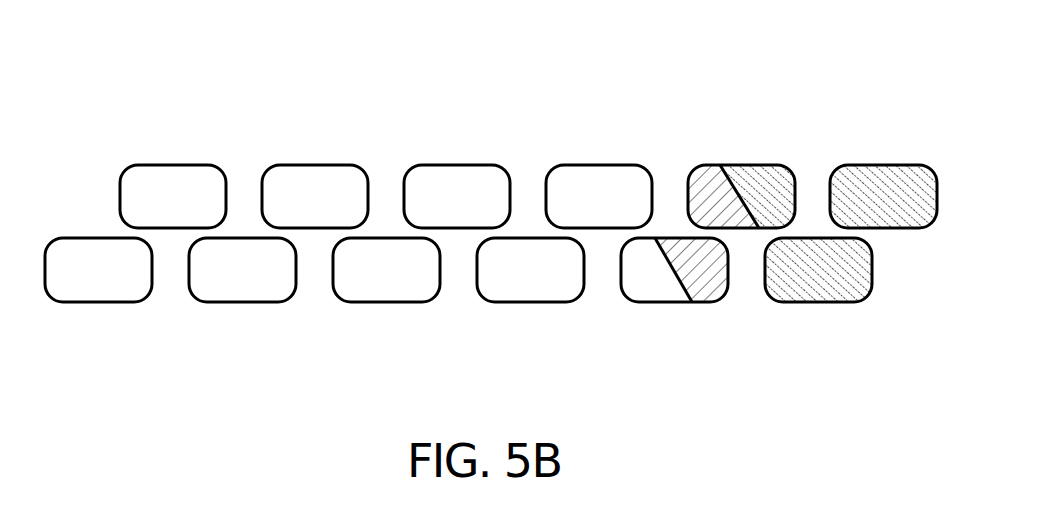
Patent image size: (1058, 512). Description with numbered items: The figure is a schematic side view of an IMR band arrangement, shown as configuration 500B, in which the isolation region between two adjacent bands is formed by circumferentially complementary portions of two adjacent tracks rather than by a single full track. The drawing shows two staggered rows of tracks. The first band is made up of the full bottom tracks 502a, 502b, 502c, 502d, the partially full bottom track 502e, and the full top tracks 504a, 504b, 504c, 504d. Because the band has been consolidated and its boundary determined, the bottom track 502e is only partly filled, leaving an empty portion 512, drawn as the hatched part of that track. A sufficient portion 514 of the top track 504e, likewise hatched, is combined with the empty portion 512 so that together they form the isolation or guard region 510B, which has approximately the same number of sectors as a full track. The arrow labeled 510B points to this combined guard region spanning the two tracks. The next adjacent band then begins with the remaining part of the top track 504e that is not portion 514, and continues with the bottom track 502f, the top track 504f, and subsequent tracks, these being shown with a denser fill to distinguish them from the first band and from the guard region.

The configuration 500B is at (152, 85).
The isolation or guard region 510B is at (690, 139).
The full top track 504a is at (166, 165).
The full top track 504b is at (302, 165).
The full top track 504c is at (444, 165).
The full top track 504d is at (566, 165).
The top track 504e is at (781, 157).
The top track 504f is at (858, 165).
The full bottom track 502a is at (83, 302).
The full bottom track 502b is at (230, 302).
The full bottom track 502c is at (365, 302).
The full bottom track 502d is at (504, 302).
The partially full bottom track 502e is at (686, 320).
The bottom track 502f is at (807, 302).
The empty portion 512 is at (700, 302).
The portion of the top track 514 is at (707, 165).